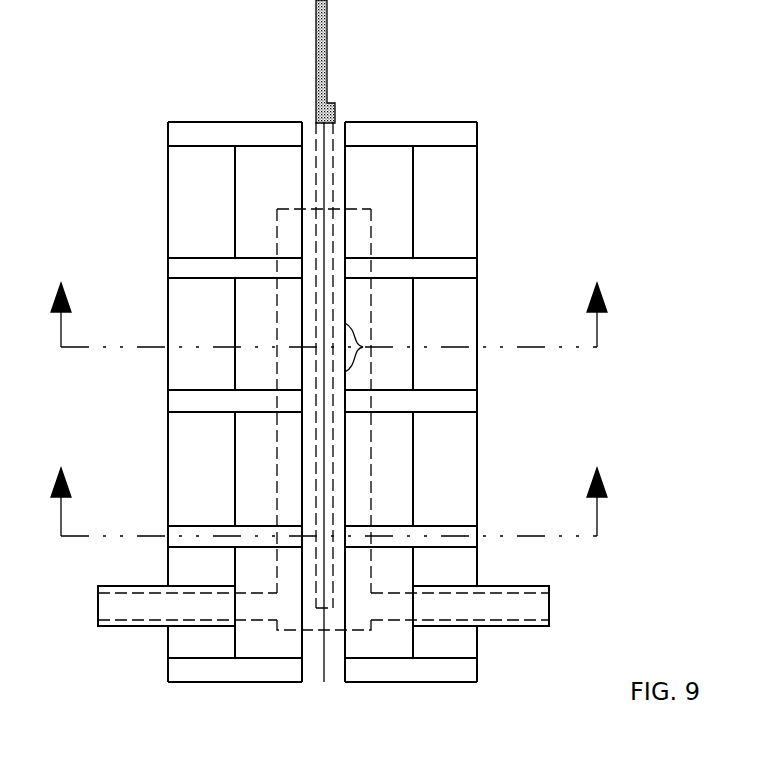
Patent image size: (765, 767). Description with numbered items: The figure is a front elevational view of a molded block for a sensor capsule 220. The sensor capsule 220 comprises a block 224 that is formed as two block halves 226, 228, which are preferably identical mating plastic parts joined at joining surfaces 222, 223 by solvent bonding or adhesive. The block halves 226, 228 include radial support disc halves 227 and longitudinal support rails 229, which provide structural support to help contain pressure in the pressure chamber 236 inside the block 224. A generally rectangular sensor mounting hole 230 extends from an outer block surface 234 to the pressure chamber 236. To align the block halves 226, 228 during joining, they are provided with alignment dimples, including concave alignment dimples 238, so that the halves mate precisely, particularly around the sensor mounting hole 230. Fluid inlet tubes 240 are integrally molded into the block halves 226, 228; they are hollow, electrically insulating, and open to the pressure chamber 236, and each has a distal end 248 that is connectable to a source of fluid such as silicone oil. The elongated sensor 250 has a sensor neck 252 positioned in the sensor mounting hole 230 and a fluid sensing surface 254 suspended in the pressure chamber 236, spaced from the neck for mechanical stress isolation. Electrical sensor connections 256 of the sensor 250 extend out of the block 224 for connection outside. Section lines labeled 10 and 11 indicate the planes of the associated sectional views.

The sensor capsule 220 is at (120, 92).
The joining surface 222 is at (323, 453).
The joining surface 223 is at (324, 453).
The block 224 is at (240, 703).
The block half 226 is at (312, 683).
The radial support disc halves 227 is at (187, 137).
The block half 228 is at (332, 683).
The longitudinal support rails 229 is at (190, 200).
The sensor mounting hole 230 is at (317, 173).
The outer block surface 234 is at (356, 100).
The pressure chamber 236 is at (277, 317).
The concave alignment dimples 238 is at (363, 347).
The fluid inlet tubes 240 is at (120, 585).
The distal end 248 is at (98, 607).
The sensor 250 is at (316, 113).
The sensor neck 252 is at (333, 175).
The fluid sensing surface 254 is at (333, 507).
The electrical sensor connections 256 is at (327, 37).
The section line 10-10' 10 is at (332, 489).
The section line 11-11' 11 is at (330, 301).